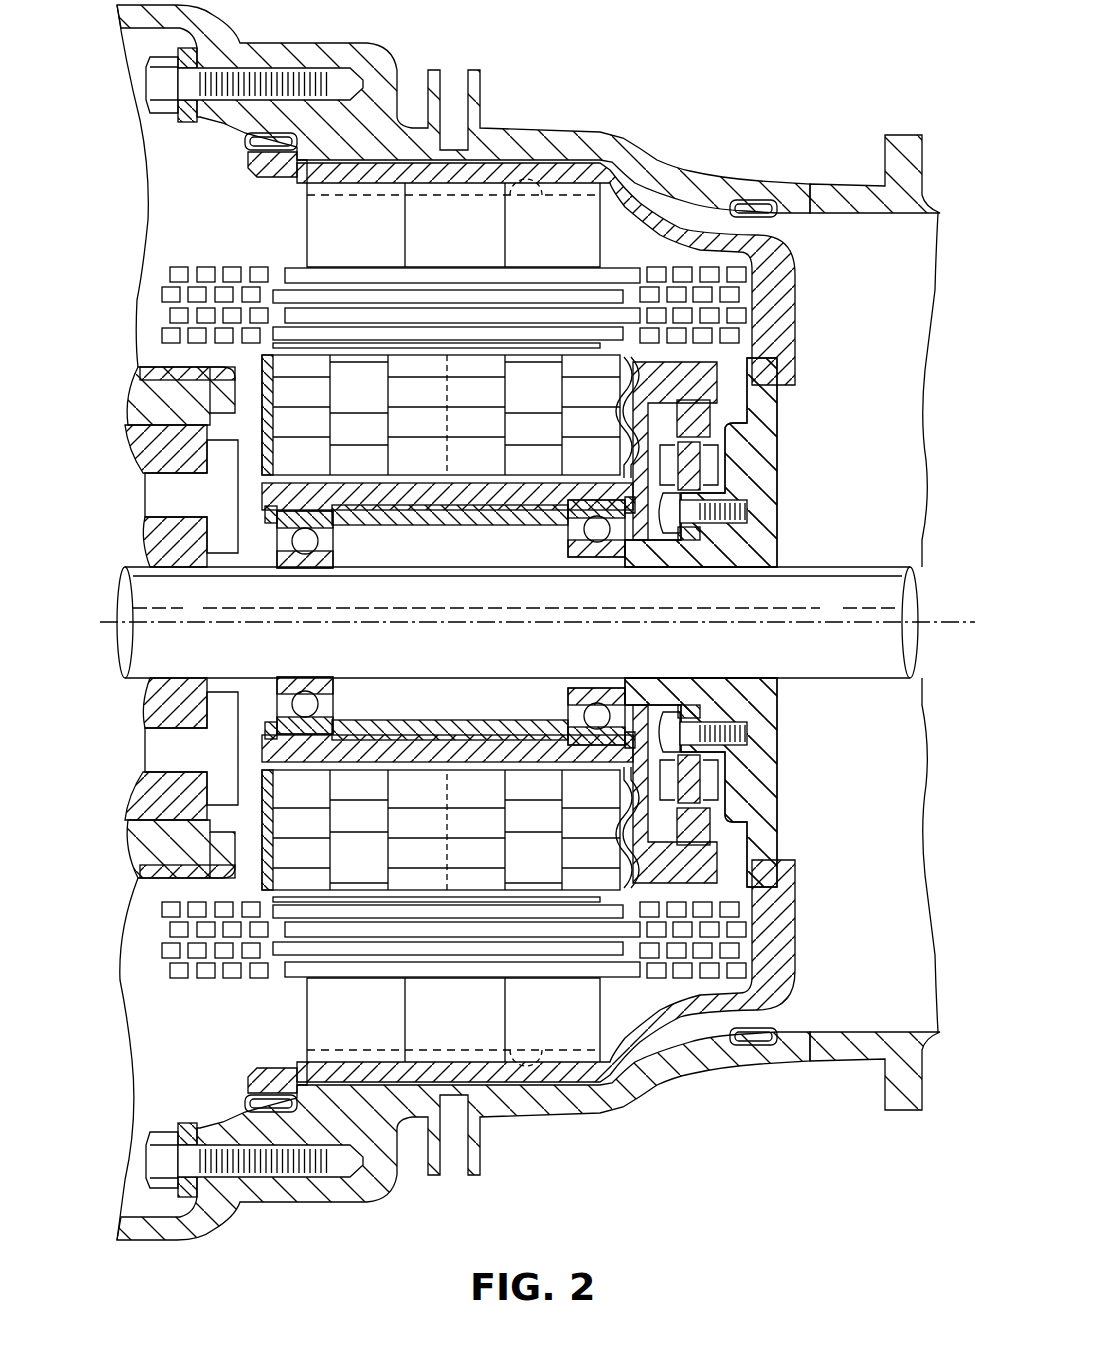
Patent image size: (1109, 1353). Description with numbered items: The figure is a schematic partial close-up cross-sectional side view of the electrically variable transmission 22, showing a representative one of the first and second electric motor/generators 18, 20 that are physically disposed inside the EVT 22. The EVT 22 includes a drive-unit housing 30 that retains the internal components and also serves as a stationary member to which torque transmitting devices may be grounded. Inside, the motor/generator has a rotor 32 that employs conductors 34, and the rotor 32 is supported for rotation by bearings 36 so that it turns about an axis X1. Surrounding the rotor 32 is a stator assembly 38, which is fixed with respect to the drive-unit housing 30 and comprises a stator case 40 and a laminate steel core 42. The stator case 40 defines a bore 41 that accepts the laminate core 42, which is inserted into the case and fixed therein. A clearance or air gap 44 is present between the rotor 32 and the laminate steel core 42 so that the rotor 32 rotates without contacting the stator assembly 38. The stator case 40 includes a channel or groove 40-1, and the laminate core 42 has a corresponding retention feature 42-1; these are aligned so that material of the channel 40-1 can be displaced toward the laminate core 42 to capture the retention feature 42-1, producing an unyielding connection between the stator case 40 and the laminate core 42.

The first electric motor/generator 18 is at (808, 697).
The second electric motor/generator 20 is at (701, 622).
The electrically variable transmission 22 is at (955, 163).
The drive-unit housing 30 is at (790, 183).
The rotor 32 is at (577, 395).
The conductors 34 is at (464, 424).
The bearings 36 is at (318, 538).
The stator assembly 38 is at (275, 235).
The stator case 40 is at (797, 330).
The channel 40-1 is at (297, 193).
The bore 41 is at (527, 190).
The laminate steel core 42 is at (568, 245).
The retention feature 42-1 is at (545, 185).
The air gap 44 is at (292, 347).
The axis X1 is at (970, 620).